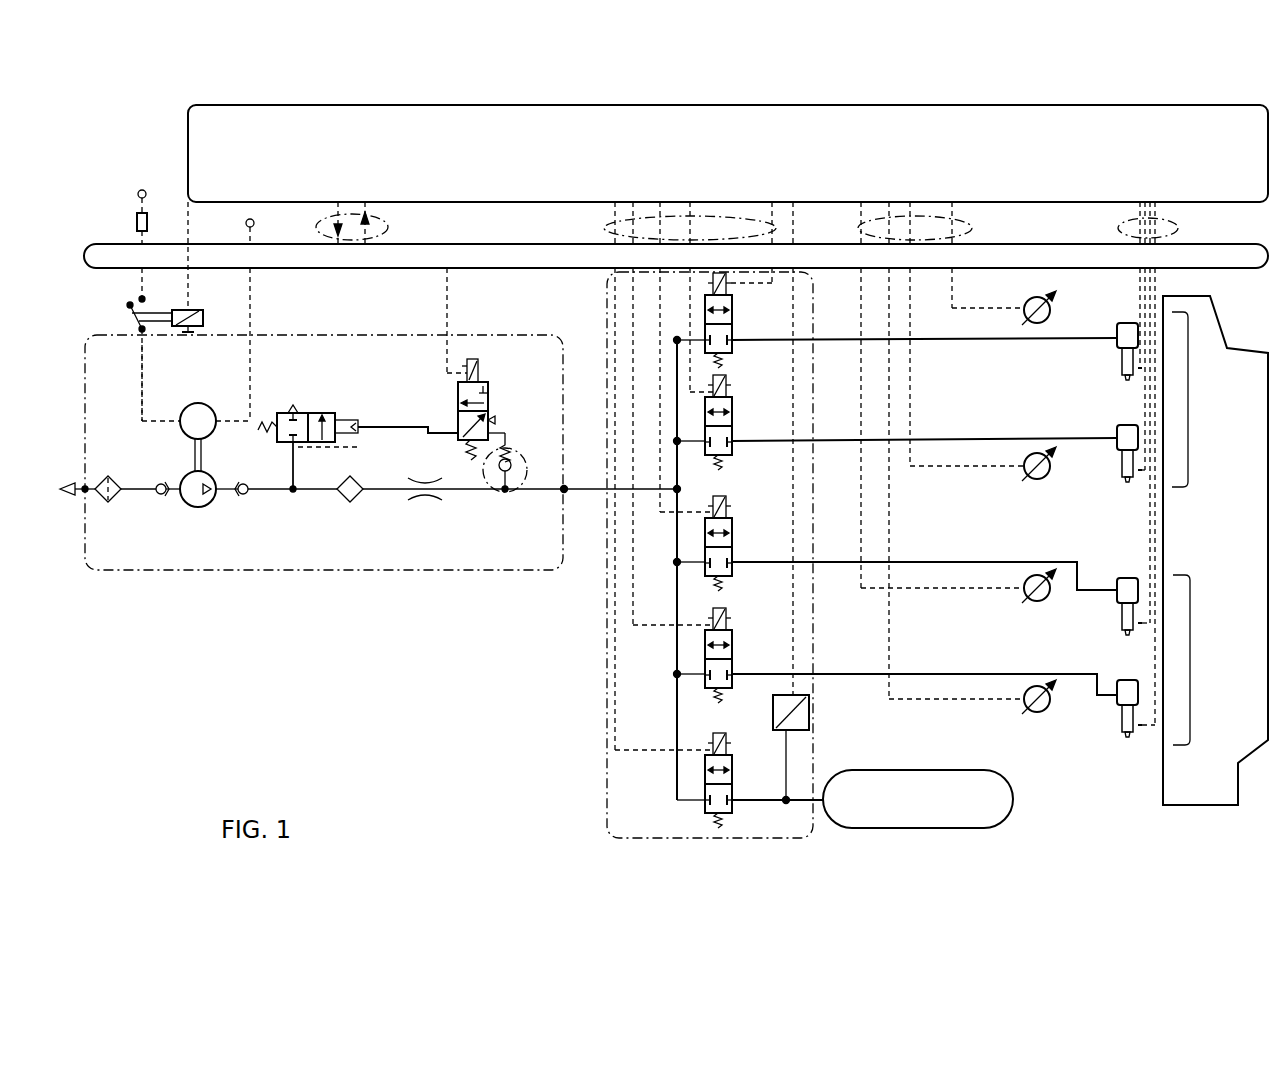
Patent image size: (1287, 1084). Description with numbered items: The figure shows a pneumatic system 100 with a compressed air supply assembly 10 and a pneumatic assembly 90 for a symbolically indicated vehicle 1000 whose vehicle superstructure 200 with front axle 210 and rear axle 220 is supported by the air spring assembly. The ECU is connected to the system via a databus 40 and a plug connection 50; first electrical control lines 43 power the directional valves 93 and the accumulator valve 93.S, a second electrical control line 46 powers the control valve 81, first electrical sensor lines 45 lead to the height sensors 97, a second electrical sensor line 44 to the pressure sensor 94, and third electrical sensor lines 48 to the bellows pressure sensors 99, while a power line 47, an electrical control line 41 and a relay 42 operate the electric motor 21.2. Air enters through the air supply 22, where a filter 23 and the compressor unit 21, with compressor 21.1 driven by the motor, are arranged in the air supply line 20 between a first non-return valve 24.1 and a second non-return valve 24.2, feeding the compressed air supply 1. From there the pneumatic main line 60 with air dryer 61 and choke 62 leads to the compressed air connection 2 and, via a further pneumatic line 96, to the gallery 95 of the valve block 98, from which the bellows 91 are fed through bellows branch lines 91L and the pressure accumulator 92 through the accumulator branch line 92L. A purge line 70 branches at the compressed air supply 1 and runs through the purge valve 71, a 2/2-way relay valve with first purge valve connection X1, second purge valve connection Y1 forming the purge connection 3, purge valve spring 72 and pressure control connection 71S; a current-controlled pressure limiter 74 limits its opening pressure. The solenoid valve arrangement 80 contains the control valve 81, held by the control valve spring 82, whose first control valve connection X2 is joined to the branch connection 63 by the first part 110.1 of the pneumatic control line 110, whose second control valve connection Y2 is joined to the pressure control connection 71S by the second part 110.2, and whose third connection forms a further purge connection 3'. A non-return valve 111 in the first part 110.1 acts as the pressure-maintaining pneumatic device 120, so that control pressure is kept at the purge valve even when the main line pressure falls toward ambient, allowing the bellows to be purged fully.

The vehicle 1000 is at (1083, 89).
The plug connection 50 is at (1203, 246).
The power line 47 is at (140, 242).
The electrical control line 41 is at (192, 232).
The relay 42 is at (173, 309).
The databus 40 is at (400, 228).
The first electrical control lines 43 is at (604, 228).
The second electrical sensor line 44 is at (797, 226).
The first electrical sensor lines 45 is at (968, 228).
The third electrical sensor lines 48 is at (1118, 228).
The second electrical control line 46 is at (445, 306).
The compressed air supply assembly 10 is at (146, 605).
The pneumatic system 100 is at (277, 710).
The air supply 22 is at (122, 425).
The compressor unit 21 is at (203, 562).
The air supply line 20 is at (148, 486).
The filter 23 is at (112, 504).
The first non-return valve 24.1 is at (161, 497).
The compressor 21.1 is at (206, 506).
The electric motor 21.2 is at (185, 404).
The second non-return valve 24.2 is at (245, 496).
The compressed air supply 1 is at (293, 495).
The purge line 70 is at (290, 462).
The purge valve 71 is at (337, 412).
The purge connection 3 is at (289, 379).
The purge valve spring 72 is at (268, 420).
The pressure control connection 71S is at (350, 418).
The second purge valve connection Y1 is at (312, 412).
The first purge valve connection X1 is at (298, 449).
The pressure limiter 74 is at (356, 447).
The second part of the pneumatic control line 110.2 is at (400, 424).
The control valve 81 is at (457, 440).
The further purge connection 3' is at (488, 399).
The second control valve connection Y2 is at (458, 422).
The first control valve connection X2 is at (506, 428).
The control valve spring 82 is at (473, 462).
The pneumatic control line 110 is at (522, 432).
The pressure-maintaining pneumatic device 120 is at (535, 455).
The non-return valve 111 is at (512, 461).
The first part of the pneumatic control line 110.1 is at (509, 482).
The branch connection 63 is at (508, 498).
The air dryer 61 is at (348, 503).
The pneumatic main line 60 is at (380, 493).
The choke 62 is at (423, 501).
The further pneumatic line 96 is at (566, 482).
The compressed air connection 2 is at (568, 493).
The solenoid valve arrangement 80 is at (472, 332).
The pneumatic assembly 90 is at (525, 769).
The valve block 98 is at (605, 797).
The gallery 95 is at (675, 708).
The directional valve 93 is at (734, 303).
The bellows branch lines 91L is at (953, 343).
The bellows 91 is at (1116, 345).
The bellows pressure sensors 99 is at (1133, 380).
The height sensor 97 is at (1026, 300).
The pressure sensor 94 is at (812, 716).
The accumulator valve 93.S is at (734, 770).
The accumulator branch line 92L is at (773, 803).
The pressure accumulator 92 is at (1014, 800).
The vehicle superstructure 200 is at (1248, 348).
The front axle 210 is at (1190, 406).
The rear axle 220 is at (1192, 643).